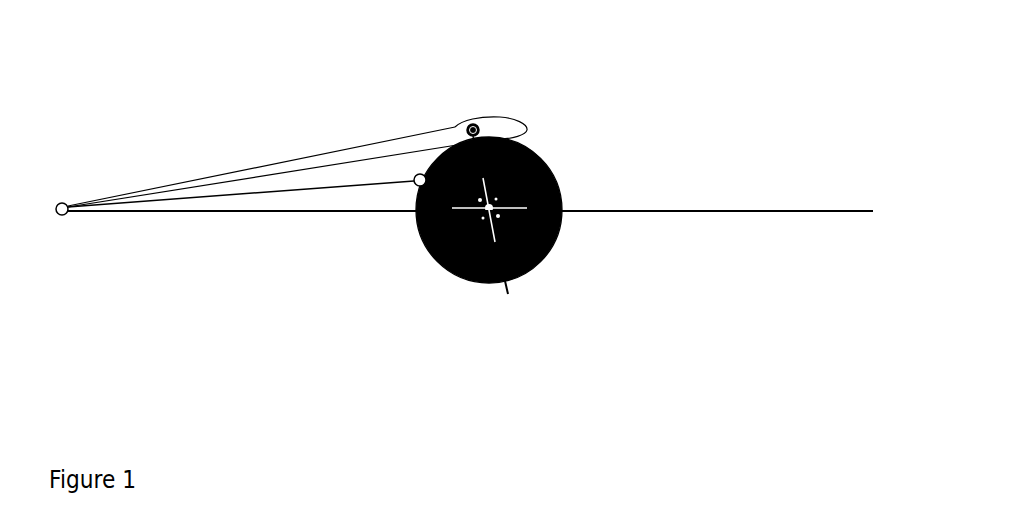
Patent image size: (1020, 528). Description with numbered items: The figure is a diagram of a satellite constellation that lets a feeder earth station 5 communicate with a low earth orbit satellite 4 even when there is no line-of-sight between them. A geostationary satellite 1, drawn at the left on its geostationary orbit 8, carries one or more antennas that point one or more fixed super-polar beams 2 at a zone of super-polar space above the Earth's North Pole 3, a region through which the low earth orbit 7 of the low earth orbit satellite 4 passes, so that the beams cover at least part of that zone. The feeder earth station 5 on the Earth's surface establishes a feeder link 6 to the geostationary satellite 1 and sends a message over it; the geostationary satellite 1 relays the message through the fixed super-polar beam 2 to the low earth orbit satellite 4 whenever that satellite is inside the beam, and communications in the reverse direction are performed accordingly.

The geostationary satellite 1 is at (68, 217).
The fixed super-polar beam 2 is at (265, 160).
The Earth's North Pole 3 is at (647, 169).
The low earth orbit satellite 4 is at (468, 118).
The feeder earth station 5 is at (413, 196).
The feeder link 6 is at (266, 193).
The Low Earth (Polar) Orbit 7 is at (582, 328).
The Geostationary Orbit 8 is at (666, 213).